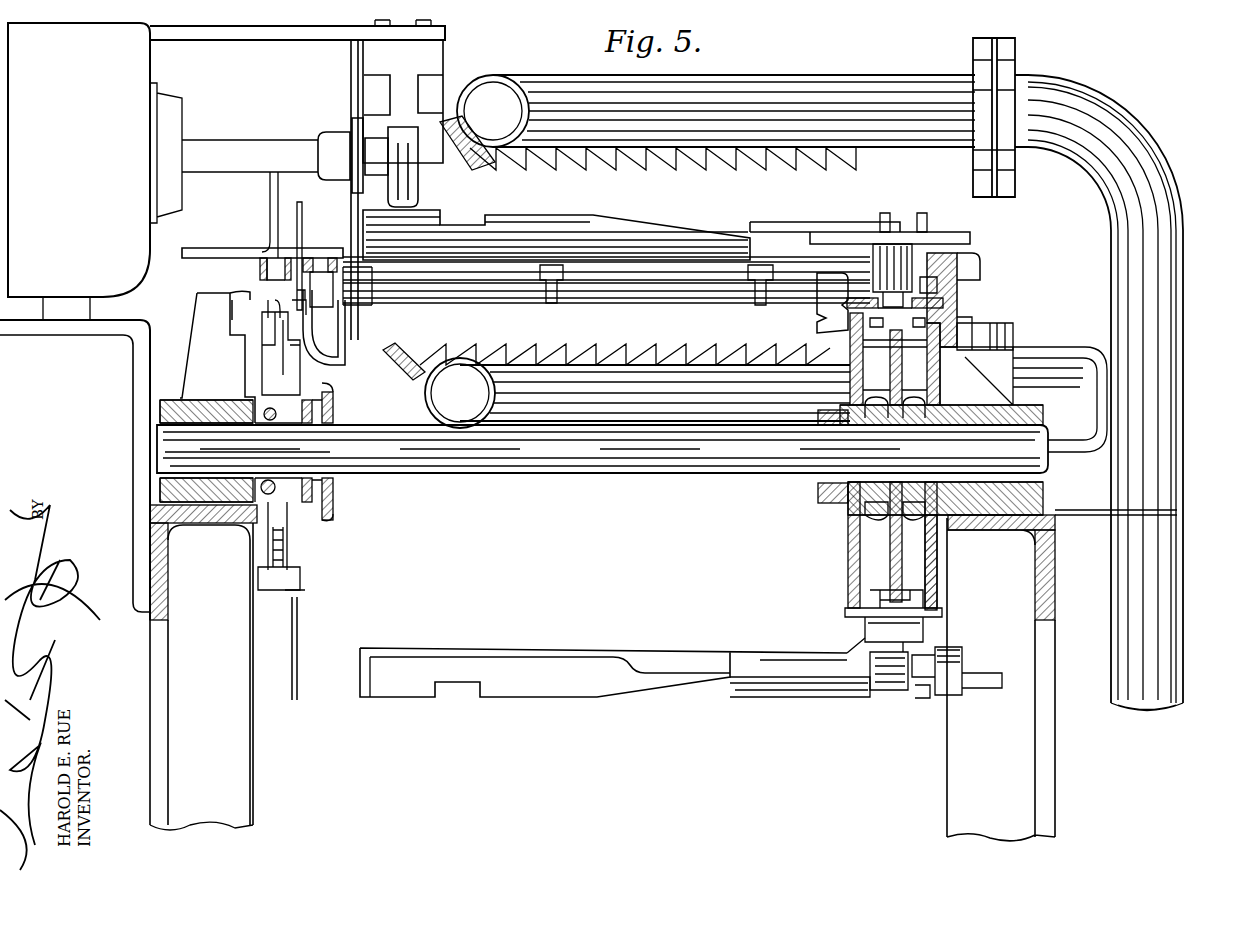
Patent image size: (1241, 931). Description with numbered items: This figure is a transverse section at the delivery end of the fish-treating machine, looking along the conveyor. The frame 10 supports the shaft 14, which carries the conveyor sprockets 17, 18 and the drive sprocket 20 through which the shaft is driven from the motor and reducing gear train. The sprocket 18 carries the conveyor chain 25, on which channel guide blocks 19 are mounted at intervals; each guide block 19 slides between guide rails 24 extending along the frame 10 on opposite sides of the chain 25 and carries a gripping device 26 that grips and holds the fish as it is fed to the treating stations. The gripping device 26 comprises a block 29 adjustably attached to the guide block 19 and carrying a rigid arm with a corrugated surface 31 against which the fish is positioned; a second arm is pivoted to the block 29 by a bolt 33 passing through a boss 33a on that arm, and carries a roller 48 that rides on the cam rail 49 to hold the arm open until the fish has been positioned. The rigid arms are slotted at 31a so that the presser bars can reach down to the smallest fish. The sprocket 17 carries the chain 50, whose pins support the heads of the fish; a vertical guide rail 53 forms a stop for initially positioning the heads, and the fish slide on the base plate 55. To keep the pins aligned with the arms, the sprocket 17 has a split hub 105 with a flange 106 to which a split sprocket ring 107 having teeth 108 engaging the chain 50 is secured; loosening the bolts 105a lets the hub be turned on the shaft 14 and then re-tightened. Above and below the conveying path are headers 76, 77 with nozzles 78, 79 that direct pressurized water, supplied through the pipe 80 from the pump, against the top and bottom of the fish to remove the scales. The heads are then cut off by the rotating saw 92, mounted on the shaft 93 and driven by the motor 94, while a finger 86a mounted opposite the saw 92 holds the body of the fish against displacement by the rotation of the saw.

The frame 10 is at (150, 553).
The shaft 14 is at (610, 474).
The conveyor sprocket 17 is at (290, 548).
The conveyor sprocket 18 is at (890, 535).
The channel guide block 19 is at (940, 313).
The drive sprocket 20 is at (334, 411).
The guide rails 24 is at (817, 312).
The conveyor chain 25 is at (848, 590).
The gripping device 26 is at (652, 685).
The block 29 is at (938, 283).
The surface 31 is at (560, 216).
The slots 31a is at (476, 683).
The bolt 33 is at (898, 225).
The boss 33a is at (920, 252).
The roller 48 is at (945, 256).
The cam rail 49 is at (982, 265).
The chain 50 is at (290, 595).
The vertical guide rail 53 is at (270, 207).
The base plate 55 is at (615, 280).
The header 76 is at (802, 82).
The header 77 is at (637, 393).
The nozzles 78 is at (718, 165).
The nozzles 79 is at (690, 362).
The pipe 80 is at (1178, 410).
The finger 86a is at (419, 194).
The rotating saw 92 is at (359, 326).
The shaft 93 is at (276, 140).
The motor 94 is at (132, 255).
The split hub 105 is at (260, 393).
The bolts 105a is at (276, 412).
The flange 106 is at (320, 367).
The split sprocket ring 107 is at (262, 357).
The teeth 108 is at (278, 310).